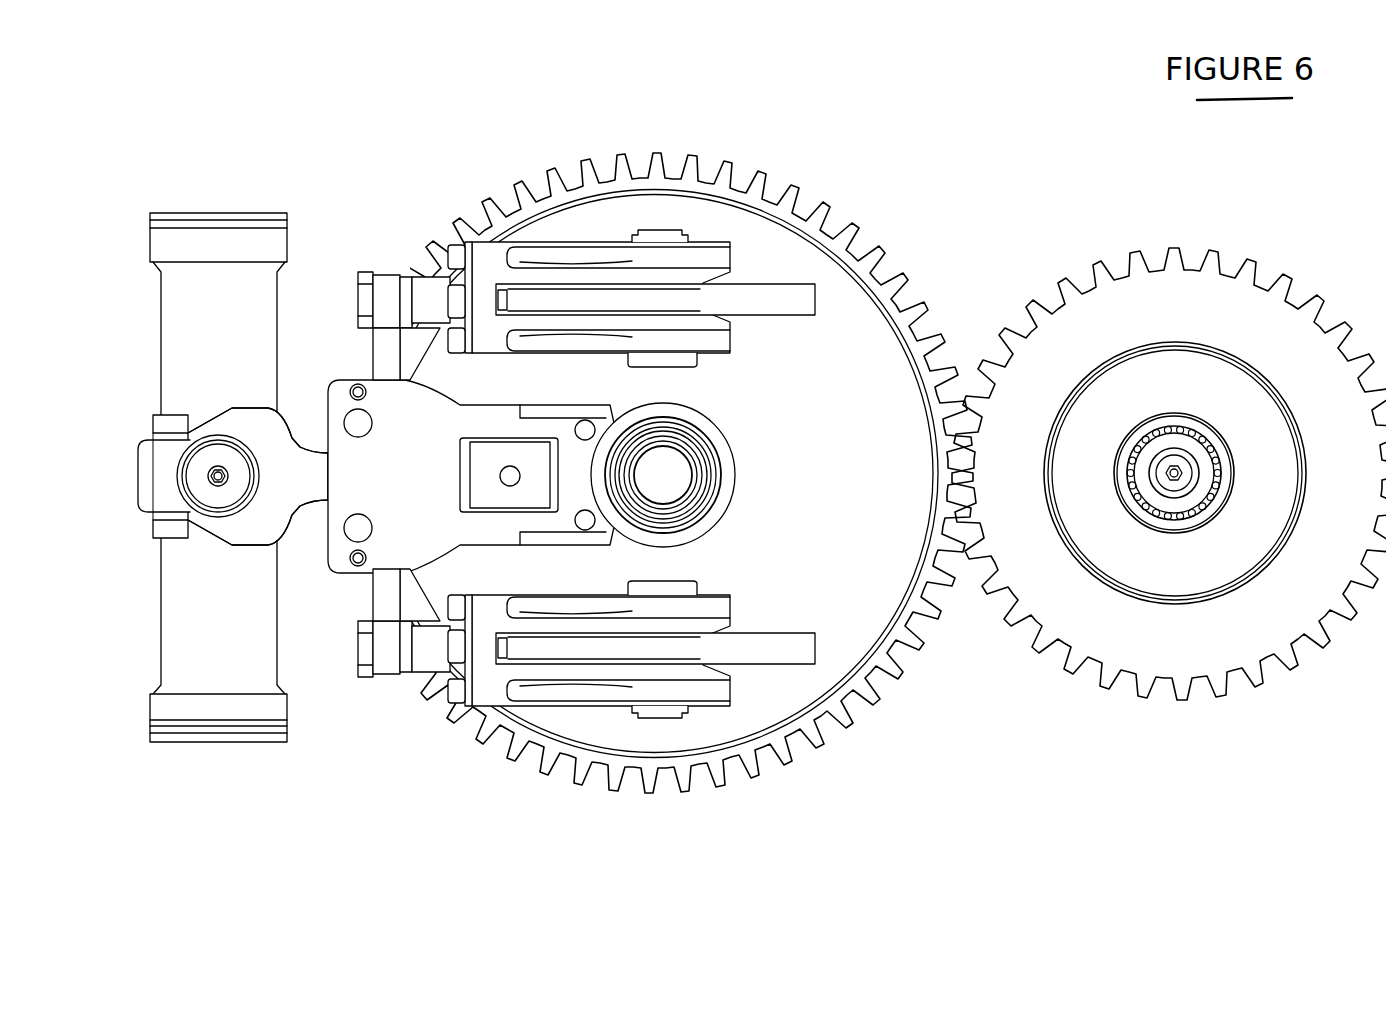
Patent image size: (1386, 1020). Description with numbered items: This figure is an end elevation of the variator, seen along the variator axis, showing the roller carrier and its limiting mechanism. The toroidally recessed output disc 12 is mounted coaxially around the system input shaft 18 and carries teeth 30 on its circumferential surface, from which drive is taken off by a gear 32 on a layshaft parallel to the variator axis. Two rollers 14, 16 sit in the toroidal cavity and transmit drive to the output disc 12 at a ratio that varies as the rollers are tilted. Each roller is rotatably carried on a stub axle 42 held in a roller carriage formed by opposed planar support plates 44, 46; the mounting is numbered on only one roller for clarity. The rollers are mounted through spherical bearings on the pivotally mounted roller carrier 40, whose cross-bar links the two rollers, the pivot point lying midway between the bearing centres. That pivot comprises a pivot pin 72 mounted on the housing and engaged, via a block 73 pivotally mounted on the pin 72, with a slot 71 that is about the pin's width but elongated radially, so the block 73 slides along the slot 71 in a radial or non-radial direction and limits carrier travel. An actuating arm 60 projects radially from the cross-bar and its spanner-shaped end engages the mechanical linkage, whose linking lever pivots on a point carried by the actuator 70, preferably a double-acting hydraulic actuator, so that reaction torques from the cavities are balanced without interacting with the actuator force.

The output disc 12 is at (860, 642).
The roller 14 is at (792, 303).
The roller 16 is at (793, 641).
The input shaft 18 is at (668, 482).
The teeth 30 is at (890, 258).
The gear 32 is at (1125, 258).
The roller carrier 40 is at (385, 360).
The stub axle 42 is at (668, 214).
The support plate 44 is at (717, 265).
The support plate 46 is at (712, 347).
The actuating arm 60 is at (233, 476).
The actuator 70 is at (218, 477).
The slot 71 is at (466, 496).
The pivot pin 72 is at (513, 490).
The block 73 is at (503, 469).